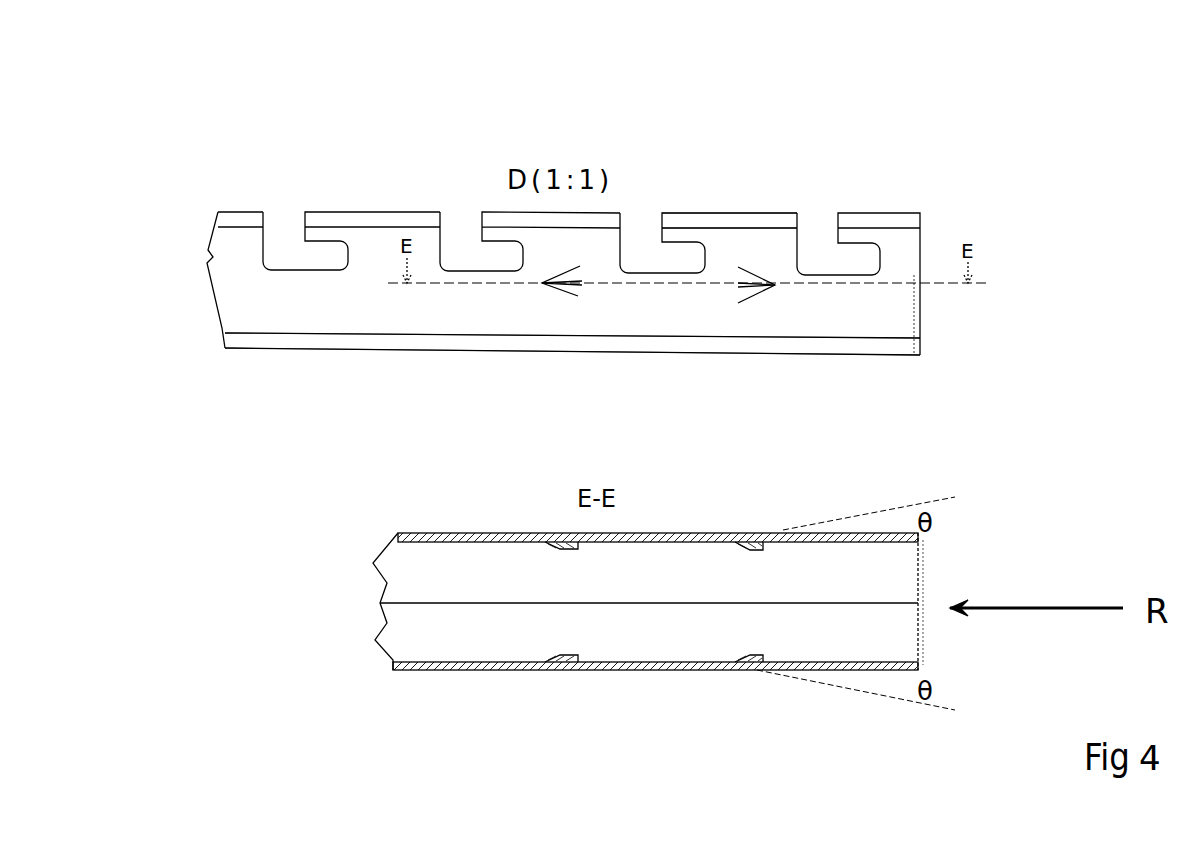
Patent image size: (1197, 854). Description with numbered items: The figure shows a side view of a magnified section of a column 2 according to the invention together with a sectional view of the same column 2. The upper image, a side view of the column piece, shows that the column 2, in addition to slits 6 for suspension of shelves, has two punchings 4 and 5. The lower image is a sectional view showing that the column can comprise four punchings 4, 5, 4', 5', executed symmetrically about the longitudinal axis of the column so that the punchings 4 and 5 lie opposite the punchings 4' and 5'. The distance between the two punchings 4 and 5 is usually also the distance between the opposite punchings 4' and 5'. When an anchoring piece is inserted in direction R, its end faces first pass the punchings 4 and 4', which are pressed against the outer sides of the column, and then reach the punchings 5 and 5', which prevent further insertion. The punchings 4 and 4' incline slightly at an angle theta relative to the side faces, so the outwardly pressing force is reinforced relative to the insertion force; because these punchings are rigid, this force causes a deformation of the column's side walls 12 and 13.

The column 2 is at (955, 150).
The punching 4 is at (772, 516).
The punching 5 is at (564, 528).
The slits 6 is at (822, 215).
The side wall 12 is at (418, 528).
The side wall 13 is at (337, 305).
The punching 4' is at (734, 494).
The punching 5' is at (537, 495).